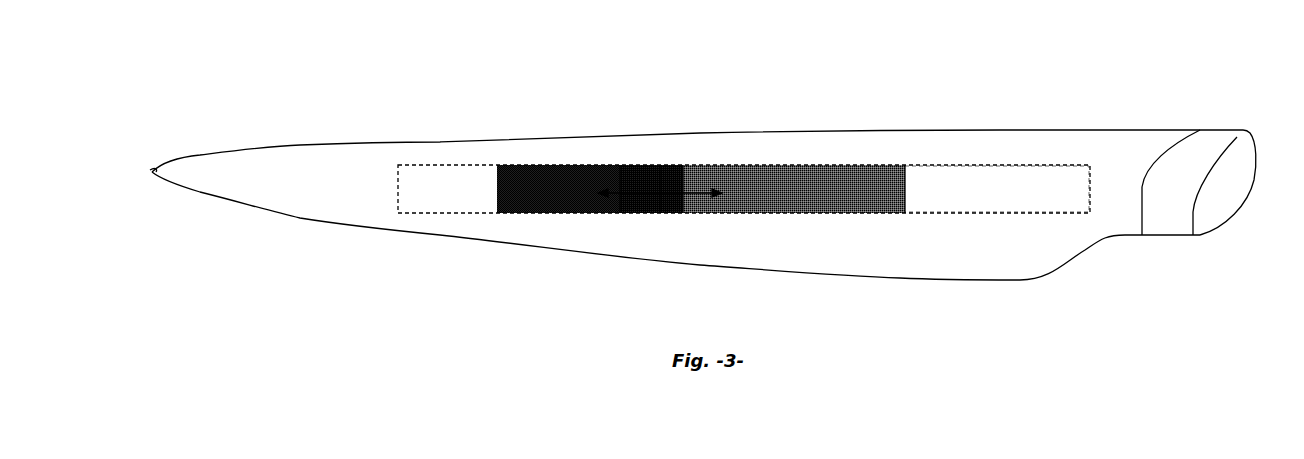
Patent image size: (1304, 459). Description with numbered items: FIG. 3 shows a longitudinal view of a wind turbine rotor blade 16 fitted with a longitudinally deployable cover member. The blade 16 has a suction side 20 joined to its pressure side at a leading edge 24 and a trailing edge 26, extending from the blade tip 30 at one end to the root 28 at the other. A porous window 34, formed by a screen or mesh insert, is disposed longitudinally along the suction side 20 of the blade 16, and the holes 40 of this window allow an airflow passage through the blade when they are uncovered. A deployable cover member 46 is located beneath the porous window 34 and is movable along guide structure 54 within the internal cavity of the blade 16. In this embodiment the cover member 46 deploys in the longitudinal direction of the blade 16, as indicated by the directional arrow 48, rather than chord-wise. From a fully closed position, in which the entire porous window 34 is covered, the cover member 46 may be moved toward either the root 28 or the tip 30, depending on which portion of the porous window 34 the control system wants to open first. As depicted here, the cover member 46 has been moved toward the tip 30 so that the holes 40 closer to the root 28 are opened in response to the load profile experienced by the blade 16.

The wind turbine rotor blade 16 is at (701, 179).
The suction side 20 is at (1046, 245).
The leading edge 24 is at (412, 139).
The trailing edge 26 is at (940, 282).
The root 28 is at (1192, 148).
The blade tip 30 is at (152, 172).
The porous window 34 is at (765, 165).
The holes 40 is at (838, 213).
The deployable cover member 46 is at (580, 213).
The directional arrow 48 is at (660, 165).
The guide structure 54 is at (953, 163).